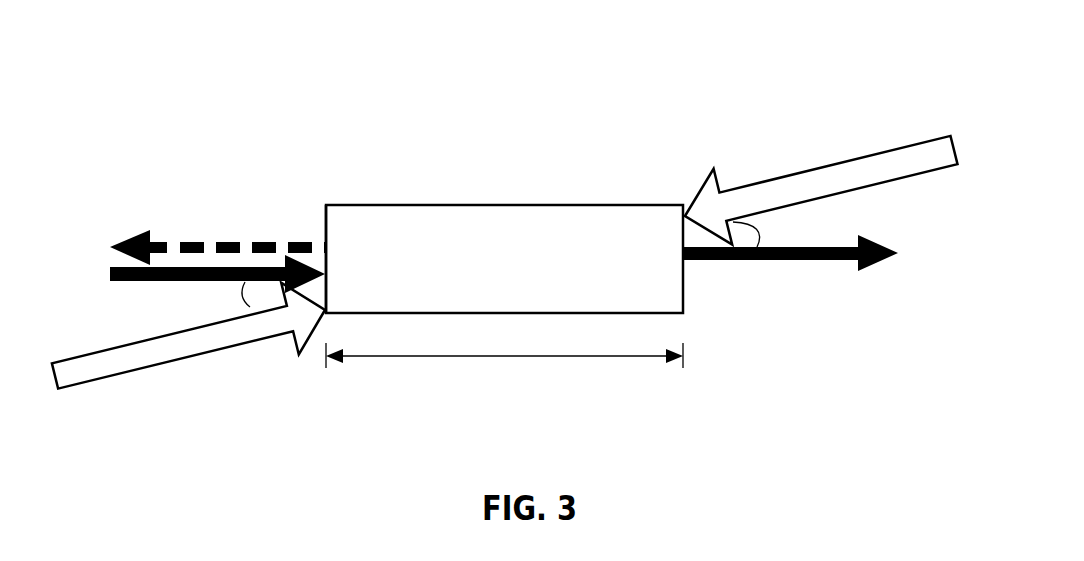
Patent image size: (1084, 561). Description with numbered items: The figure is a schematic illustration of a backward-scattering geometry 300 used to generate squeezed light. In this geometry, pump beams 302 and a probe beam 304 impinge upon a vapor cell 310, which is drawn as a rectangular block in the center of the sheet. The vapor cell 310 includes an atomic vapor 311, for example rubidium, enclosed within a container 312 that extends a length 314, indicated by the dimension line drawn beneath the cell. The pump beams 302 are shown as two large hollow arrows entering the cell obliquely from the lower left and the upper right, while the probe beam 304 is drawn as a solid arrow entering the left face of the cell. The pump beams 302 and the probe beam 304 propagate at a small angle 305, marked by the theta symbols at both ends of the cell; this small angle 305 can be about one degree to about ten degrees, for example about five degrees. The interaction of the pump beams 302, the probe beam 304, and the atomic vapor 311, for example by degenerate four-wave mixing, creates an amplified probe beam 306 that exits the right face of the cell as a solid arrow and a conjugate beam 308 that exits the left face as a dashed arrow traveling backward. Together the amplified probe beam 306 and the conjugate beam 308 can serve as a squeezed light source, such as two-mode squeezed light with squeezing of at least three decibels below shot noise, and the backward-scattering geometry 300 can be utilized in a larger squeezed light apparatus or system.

The backward-scattering geometry 300 is at (869, 51).
The pump beams 302 is at (165, 365).
The probe beam 304 is at (187, 281).
The small angle 305 is at (228, 308).
The amplified probe beam 306 is at (802, 261).
The conjugate beam 308 is at (166, 242).
The vapor cell 310 is at (518, 198).
The atomic vapor 311 is at (608, 270).
The container 312 is at (352, 201).
The length 314 is at (504, 365).